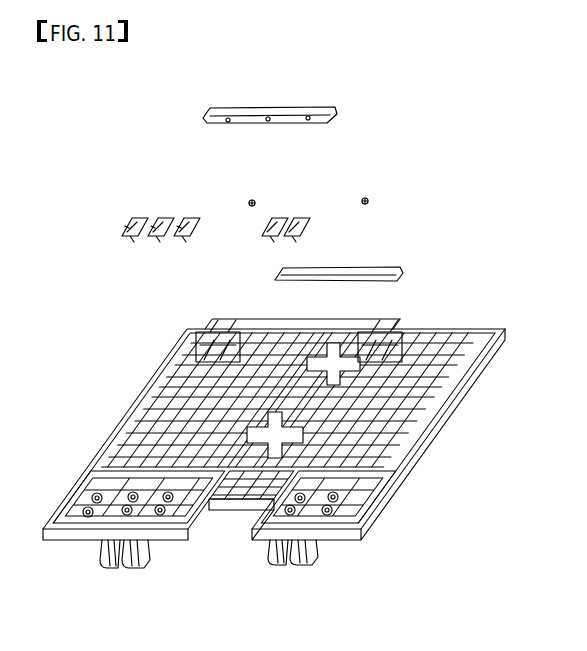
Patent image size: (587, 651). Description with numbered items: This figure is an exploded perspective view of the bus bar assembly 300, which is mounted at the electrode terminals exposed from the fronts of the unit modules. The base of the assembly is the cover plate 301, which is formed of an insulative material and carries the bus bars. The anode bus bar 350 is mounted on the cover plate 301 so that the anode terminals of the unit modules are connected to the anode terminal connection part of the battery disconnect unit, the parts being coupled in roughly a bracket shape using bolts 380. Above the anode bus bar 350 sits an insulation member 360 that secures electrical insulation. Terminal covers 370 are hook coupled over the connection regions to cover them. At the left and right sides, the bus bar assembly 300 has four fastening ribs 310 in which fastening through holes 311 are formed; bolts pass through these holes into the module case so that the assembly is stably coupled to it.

The bus bar assembly 300 is at (276, 462).
The cover plate 301 is at (437, 414).
The fastening ribs 310 is at (209, 582).
The fastening through holes 311 is at (289, 563).
The anode bus bar 350 is at (380, 268).
The insulation member 360 is at (333, 116).
The terminal covers 370 is at (122, 220).
The bolts 380 is at (370, 201).